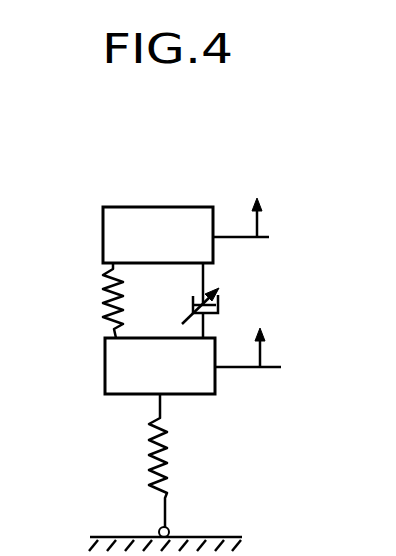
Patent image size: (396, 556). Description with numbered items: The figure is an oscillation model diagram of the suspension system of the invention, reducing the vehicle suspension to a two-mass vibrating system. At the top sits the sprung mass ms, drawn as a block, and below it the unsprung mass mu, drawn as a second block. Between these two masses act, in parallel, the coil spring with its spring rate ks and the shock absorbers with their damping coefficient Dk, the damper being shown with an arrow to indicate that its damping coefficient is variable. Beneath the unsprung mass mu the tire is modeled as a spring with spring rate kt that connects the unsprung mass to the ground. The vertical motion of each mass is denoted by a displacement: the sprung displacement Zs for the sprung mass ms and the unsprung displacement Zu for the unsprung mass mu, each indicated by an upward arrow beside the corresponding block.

The sprung mass ms is at (158, 235).
The unsprung mass mu is at (160, 366).
The spring rate of the coil spring ks is at (93, 300).
The damping coefficient of the shock absorbers Dk is at (227, 300).
The spring rate of the tire kt is at (137, 465).
The sprung displacement Zs is at (257, 218).
The unsprung displacement Zu is at (260, 348).